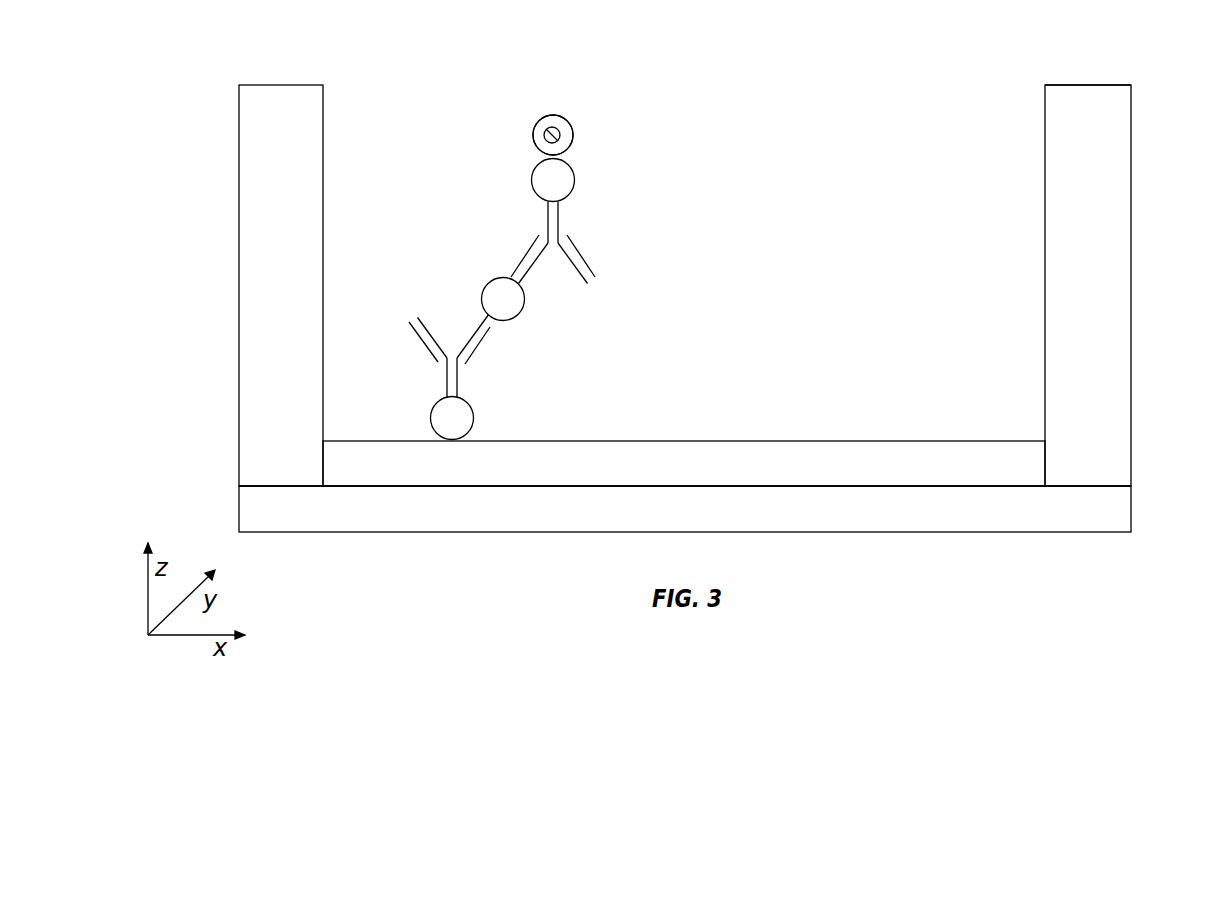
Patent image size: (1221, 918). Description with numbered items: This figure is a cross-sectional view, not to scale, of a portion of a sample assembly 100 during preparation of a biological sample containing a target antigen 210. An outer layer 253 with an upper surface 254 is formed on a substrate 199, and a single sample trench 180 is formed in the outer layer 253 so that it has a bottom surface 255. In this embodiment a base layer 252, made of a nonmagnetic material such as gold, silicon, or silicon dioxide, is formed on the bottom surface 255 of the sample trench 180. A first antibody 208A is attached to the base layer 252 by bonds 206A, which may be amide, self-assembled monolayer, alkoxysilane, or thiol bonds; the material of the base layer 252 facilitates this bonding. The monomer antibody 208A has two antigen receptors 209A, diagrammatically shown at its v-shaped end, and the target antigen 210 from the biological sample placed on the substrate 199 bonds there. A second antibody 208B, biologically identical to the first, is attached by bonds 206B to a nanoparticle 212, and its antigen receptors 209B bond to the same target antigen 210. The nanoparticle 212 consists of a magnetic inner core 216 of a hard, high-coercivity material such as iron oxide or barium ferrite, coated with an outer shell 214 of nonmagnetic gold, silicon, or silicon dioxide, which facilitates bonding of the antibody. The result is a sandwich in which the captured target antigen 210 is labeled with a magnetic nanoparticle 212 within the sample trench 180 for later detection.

The sample assembly 100 is at (906, 44).
The sample trench 180 is at (916, 153).
The substrate 199 is at (392, 520).
The base layer 252 is at (495, 476).
The outer layer 253 is at (252, 110).
The upper surface 254 is at (1088, 85).
The bottom surface 255 is at (873, 487).
The bonds 206A is at (475, 418).
The bonds 206B is at (533, 178).
The antibodies 208A is at (410, 343).
The second set of antibodies 208B is at (598, 243).
The antigen receptors 209A is at (446, 304).
The antigen receptors 209B is at (598, 282).
The target antigen 210 is at (518, 313).
The nanoparticle 212 is at (535, 122).
The outer shell 214 is at (572, 122).
The magnetic inner core 216 is at (543, 137).